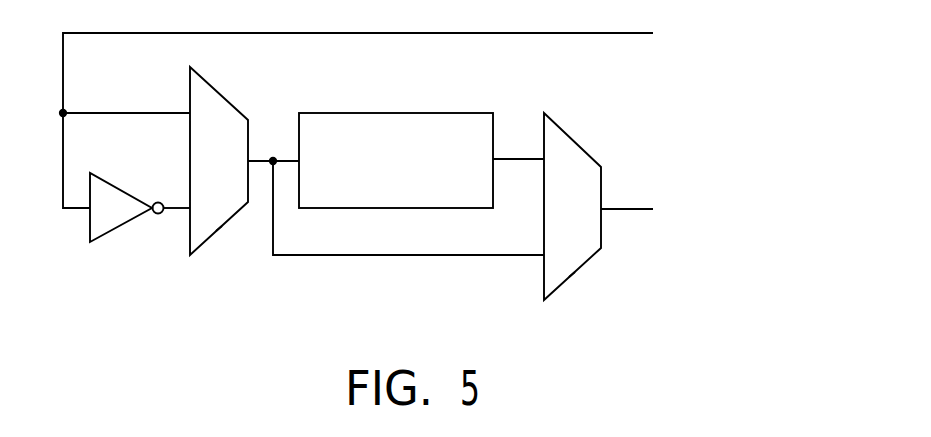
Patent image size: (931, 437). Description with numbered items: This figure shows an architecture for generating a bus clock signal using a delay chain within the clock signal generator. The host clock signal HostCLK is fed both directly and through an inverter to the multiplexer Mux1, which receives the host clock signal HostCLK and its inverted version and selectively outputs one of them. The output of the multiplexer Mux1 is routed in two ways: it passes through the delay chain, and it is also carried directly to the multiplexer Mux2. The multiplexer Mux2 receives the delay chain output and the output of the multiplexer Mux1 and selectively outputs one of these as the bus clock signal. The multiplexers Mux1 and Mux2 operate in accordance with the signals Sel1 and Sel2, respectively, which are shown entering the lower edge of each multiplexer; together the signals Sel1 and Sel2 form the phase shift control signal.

The host clock signal HostCLK is at (423, 112).
The multiplexer Mux1 is at (217, 88).
The multiplexer Mux2 is at (568, 137).
The signal Sel1 is at (218, 230).
The signal Sel2 is at (572, 276).